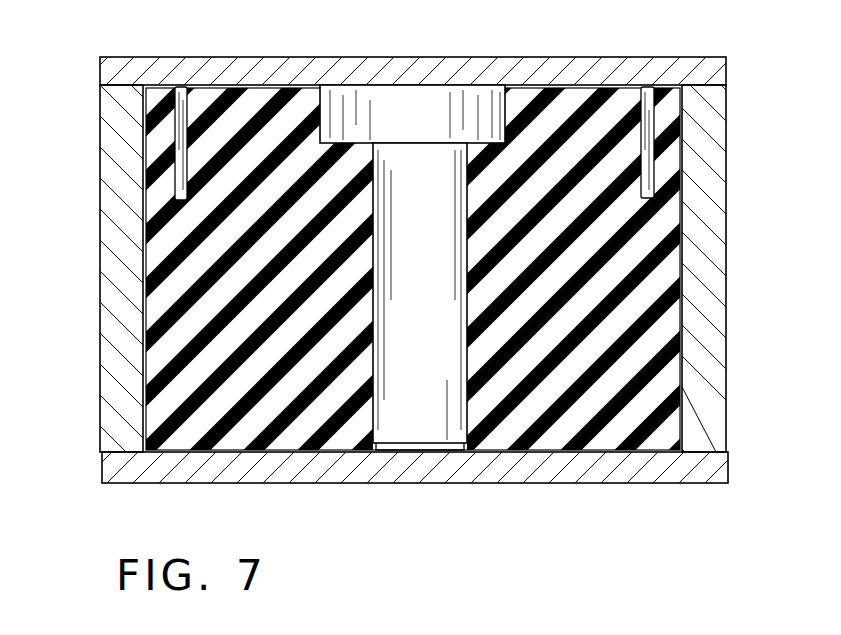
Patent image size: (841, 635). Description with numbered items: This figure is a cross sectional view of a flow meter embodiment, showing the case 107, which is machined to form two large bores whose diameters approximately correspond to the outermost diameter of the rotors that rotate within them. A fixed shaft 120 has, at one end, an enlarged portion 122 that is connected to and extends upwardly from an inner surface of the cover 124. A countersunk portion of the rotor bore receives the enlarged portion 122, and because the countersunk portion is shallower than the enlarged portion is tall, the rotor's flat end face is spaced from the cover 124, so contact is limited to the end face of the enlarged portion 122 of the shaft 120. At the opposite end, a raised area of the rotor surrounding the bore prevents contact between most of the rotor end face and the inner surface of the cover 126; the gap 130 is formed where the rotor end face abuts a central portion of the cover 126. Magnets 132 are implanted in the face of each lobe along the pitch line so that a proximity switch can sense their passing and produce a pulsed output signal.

The case 107 is at (728, 324).
The shaft 120 is at (443, 310).
The enlarged portion 122 is at (438, 123).
The cover 124 is at (585, 57).
The cover 126 is at (658, 485).
The gap 130 is at (685, 450).
The magnets 132 is at (654, 166).